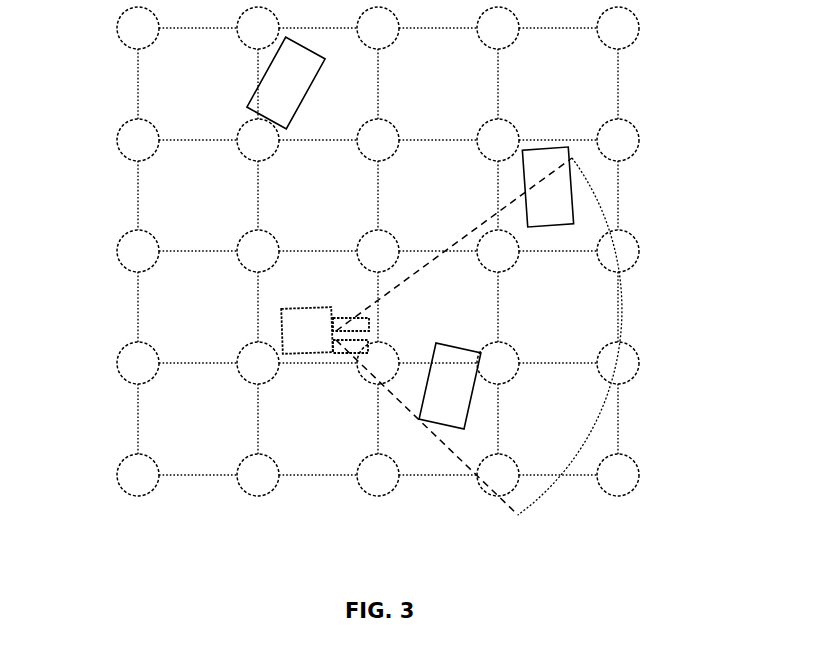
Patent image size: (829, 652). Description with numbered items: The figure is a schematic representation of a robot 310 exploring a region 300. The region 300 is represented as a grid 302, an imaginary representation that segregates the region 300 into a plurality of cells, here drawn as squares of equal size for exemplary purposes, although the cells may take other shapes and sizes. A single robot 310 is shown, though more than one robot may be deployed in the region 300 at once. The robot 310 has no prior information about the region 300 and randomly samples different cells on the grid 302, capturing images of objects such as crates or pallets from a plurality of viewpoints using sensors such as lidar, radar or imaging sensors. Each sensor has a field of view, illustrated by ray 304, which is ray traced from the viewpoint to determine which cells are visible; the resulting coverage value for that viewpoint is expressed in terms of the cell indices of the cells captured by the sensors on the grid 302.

The region 300 is at (228, 547).
The grid 302 is at (615, 80).
The ray 304 is at (623, 315).
The robot 310 is at (282, 322).